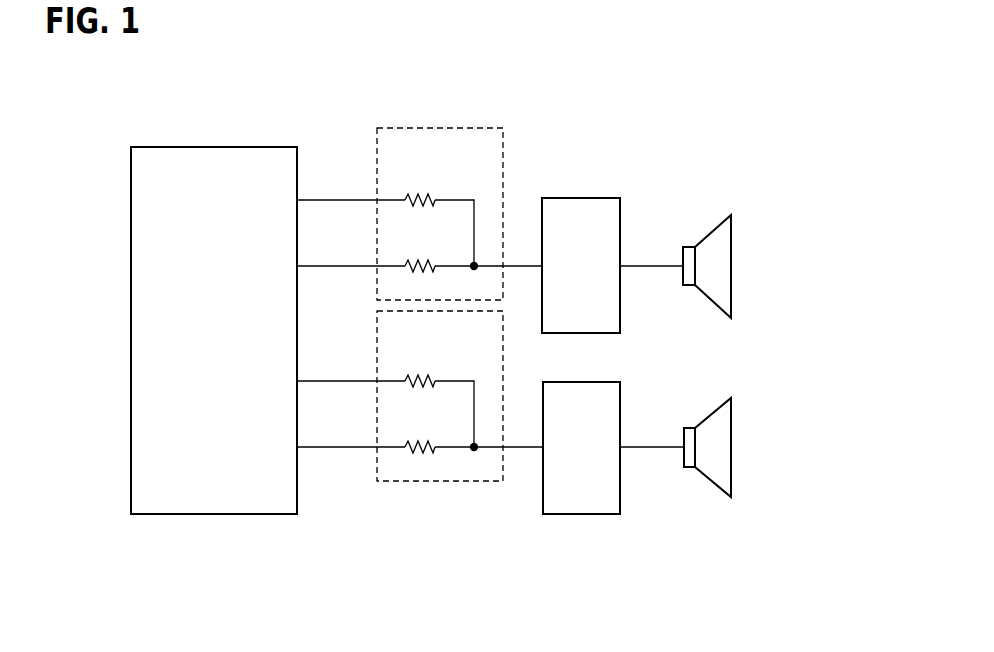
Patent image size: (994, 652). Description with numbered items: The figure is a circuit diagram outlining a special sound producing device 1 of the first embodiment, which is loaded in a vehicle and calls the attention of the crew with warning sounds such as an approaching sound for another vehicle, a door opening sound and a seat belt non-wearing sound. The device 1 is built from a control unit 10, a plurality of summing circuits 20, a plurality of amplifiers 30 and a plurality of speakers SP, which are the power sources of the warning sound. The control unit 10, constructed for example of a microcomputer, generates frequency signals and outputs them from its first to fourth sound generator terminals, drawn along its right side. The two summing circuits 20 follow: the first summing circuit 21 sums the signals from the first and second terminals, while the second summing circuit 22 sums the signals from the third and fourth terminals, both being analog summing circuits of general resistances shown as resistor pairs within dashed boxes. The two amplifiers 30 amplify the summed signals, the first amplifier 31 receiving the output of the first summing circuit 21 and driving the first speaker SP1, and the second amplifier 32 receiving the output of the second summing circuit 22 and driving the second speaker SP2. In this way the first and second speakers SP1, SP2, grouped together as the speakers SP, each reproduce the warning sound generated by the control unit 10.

The special sound producing device 1 is at (626, 141).
The control unit 10 is at (272, 147).
The summing circuits 20 is at (338, 272).
The first summing circuit 21 is at (377, 299).
The second summing circuit 22 is at (377, 327).
The amplifiers 30 is at (658, 275).
The first amplifier 31 is at (621, 282).
The second amplifier 32 is at (621, 398).
The speakers SP is at (803, 232).
The first speaker SP1 is at (733, 255).
The second speaker SP2 is at (733, 398).